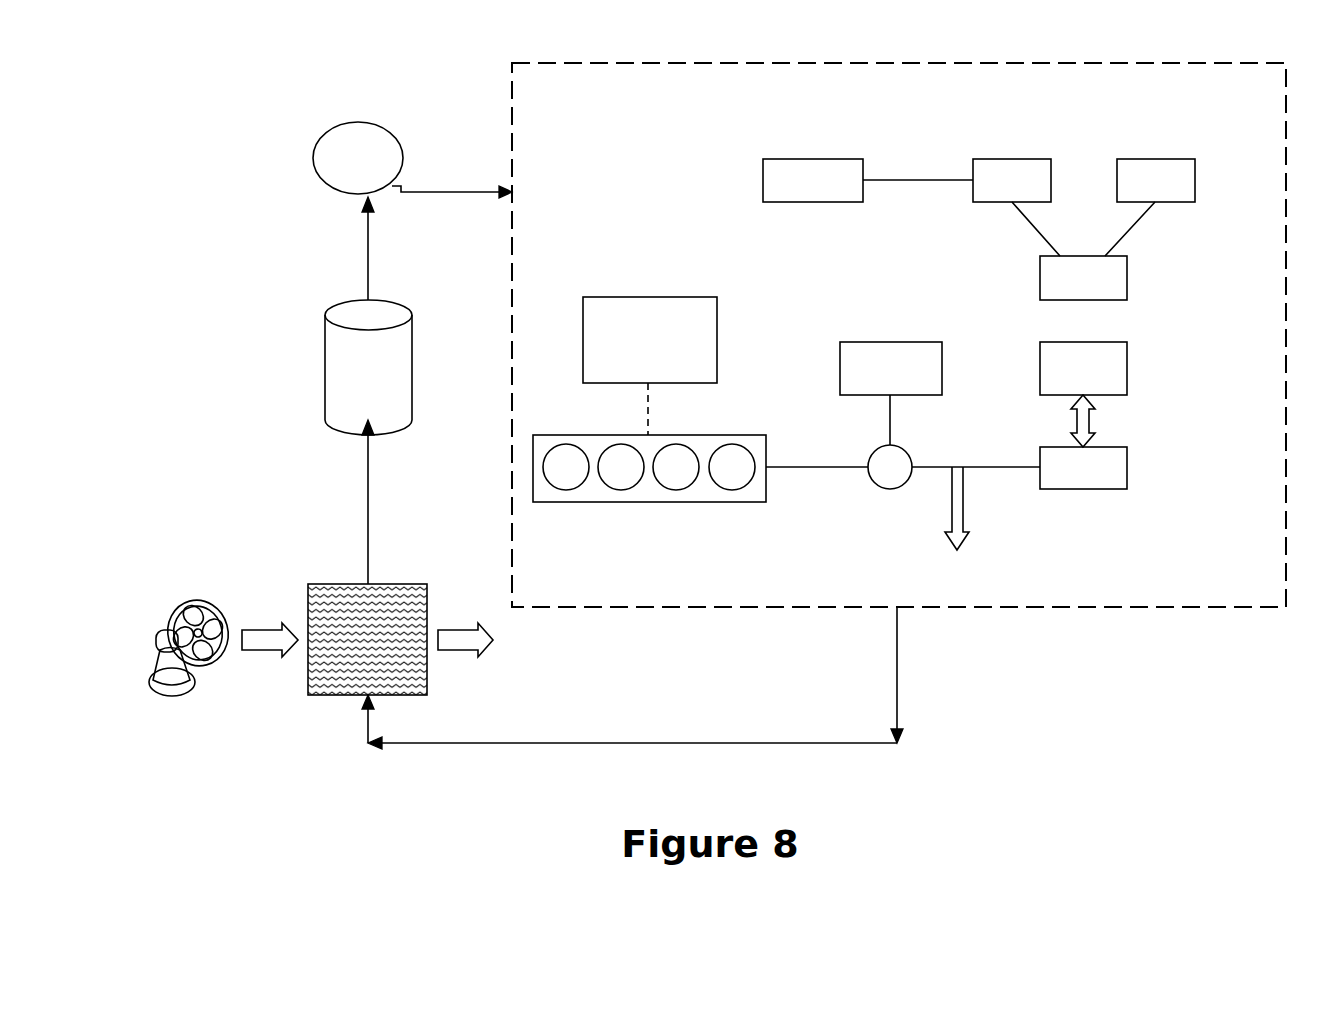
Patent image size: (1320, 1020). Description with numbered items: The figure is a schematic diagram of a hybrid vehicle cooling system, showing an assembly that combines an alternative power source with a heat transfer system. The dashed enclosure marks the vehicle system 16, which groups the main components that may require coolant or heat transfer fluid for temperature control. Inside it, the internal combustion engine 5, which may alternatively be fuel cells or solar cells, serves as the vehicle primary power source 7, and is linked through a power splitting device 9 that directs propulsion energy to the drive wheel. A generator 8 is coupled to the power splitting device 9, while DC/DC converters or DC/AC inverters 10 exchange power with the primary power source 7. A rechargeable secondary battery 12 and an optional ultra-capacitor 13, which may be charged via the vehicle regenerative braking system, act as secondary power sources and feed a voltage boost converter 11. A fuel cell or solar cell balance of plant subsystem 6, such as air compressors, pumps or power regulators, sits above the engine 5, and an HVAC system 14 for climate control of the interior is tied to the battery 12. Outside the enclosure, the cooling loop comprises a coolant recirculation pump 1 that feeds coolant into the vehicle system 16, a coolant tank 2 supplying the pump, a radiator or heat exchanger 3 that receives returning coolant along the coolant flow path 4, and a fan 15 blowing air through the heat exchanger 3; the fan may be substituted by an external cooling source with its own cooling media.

The coolant recirculation pump 1 is at (359, 122).
The coolant tank 2 is at (415, 360).
The radiator or heat exchanger 3 is at (403, 584).
The coolant flow path 4 is at (566, 730).
The internal combustion engine 5 is at (648, 502).
The balance of plant subsystems 6 is at (648, 297).
The vehicle primary power source 7 is at (1127, 466).
The generator 8 is at (887, 342).
The power splitting device 9 is at (890, 490).
The DC/DC converter or DC/AC inverter 10 is at (1127, 366).
The voltage boost converter 11 is at (1127, 272).
The rechargeable secondary battery 12 is at (1013, 159).
The ultra-capacitor 13 is at (1158, 159).
The HVAC system 14 is at (815, 159).
The fan 15 is at (176, 607).
The vehicle system 16 is at (754, 46).